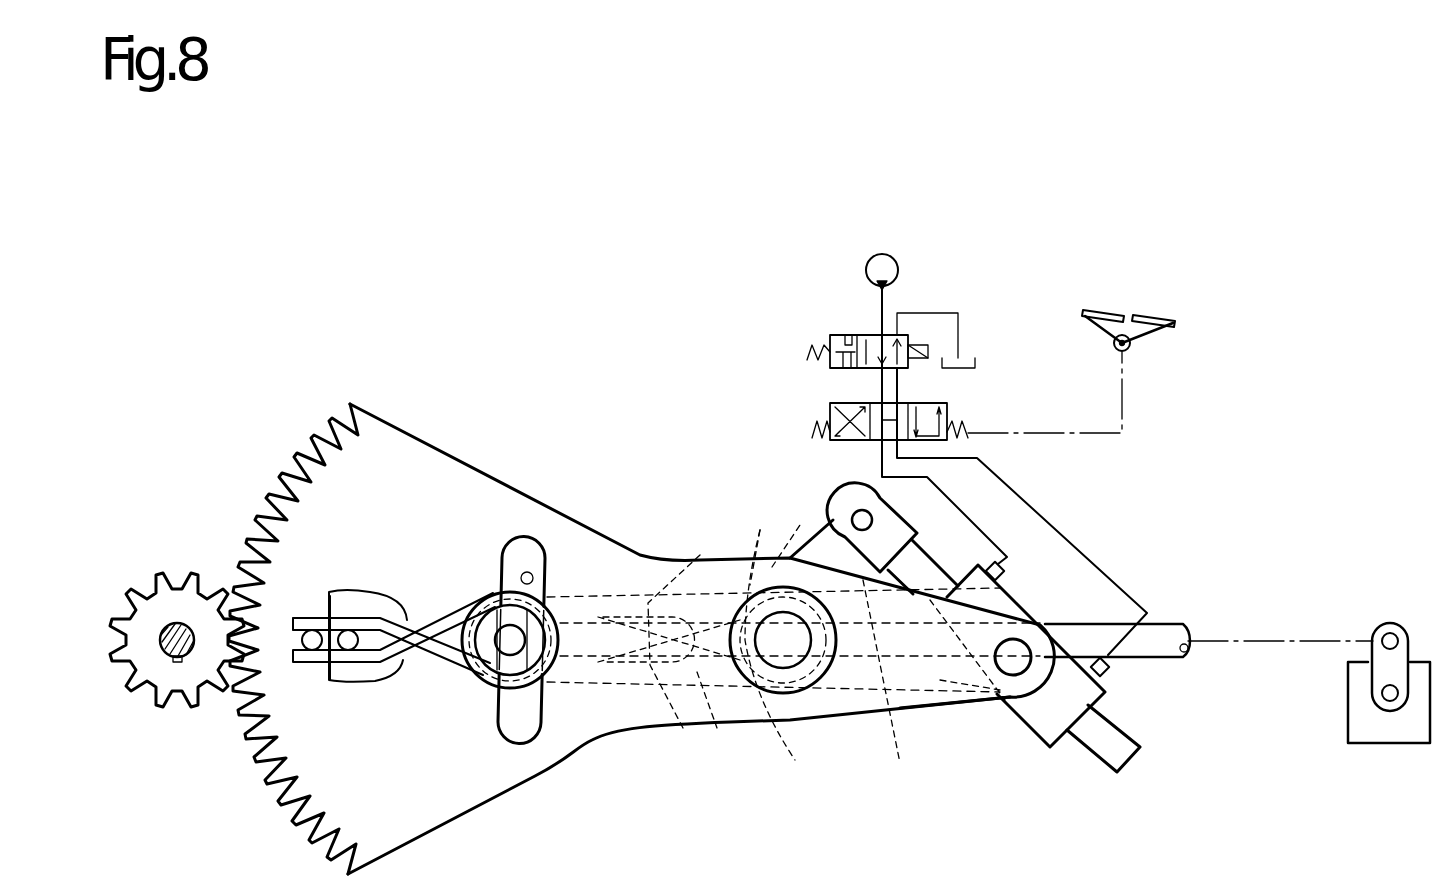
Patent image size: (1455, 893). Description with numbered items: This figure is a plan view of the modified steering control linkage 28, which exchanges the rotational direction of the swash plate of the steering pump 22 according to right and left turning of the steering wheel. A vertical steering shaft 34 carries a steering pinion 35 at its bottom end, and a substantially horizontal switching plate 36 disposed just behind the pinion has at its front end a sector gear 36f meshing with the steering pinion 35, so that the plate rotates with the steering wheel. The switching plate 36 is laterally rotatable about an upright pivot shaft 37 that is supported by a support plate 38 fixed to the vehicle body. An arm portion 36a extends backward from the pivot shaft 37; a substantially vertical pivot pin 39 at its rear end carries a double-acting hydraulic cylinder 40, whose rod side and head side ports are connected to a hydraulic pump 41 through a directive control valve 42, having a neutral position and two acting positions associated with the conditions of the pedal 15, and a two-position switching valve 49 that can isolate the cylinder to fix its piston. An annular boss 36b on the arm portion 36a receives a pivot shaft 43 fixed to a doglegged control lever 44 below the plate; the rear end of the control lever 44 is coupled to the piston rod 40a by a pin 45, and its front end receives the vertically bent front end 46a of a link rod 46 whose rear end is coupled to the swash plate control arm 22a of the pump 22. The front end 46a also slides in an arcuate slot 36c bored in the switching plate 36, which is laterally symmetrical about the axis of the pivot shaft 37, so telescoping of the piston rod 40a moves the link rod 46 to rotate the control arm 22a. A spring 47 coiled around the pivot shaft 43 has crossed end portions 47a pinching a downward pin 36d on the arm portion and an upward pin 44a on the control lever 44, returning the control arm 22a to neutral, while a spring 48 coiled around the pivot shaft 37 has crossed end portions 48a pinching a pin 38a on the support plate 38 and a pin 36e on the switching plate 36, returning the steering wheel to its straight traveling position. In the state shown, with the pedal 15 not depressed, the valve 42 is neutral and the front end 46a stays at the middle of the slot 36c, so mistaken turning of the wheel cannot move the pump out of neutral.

The pedal 15 is at (1155, 318).
The steering pump 22 is at (1390, 745).
The swash plate control arm 22a is at (1386, 624).
The steering control linkage 28 is at (418, 302).
The steering shaft 34 is at (175, 622).
The steering pinion 35 is at (150, 590).
The switching plate 36 is at (448, 452).
The arm portion 36a is at (918, 708).
The boss 36b is at (790, 585).
The arcuate slot 36c is at (540, 590).
The pin 36d is at (595, 640).
The pin 36e is at (306, 633).
The sector gear 36f is at (309, 452).
The pivot shaft 37 is at (497, 578).
The support plate 38 is at (355, 596).
The pin 38a is at (370, 650).
The pivot pin 39 is at (1010, 677).
The hydraulic cylinder 40 is at (1100, 693).
The piston rod 40a is at (942, 552).
The hydraulic pump 41 is at (866, 269).
The directive control valve 42 is at (947, 405).
The pivot shaft 43 is at (789, 662).
The control lever 44 is at (805, 550).
The pin 44a is at (717, 728).
The pin 45 is at (868, 514).
The link rod 46 is at (1178, 623).
The front end 46a is at (510, 657).
The spring 47 is at (835, 678).
The end portions 47a is at (665, 593).
The spring 48 is at (548, 682).
The end portions 48a is at (310, 613).
The switching valve 49 is at (830, 340).